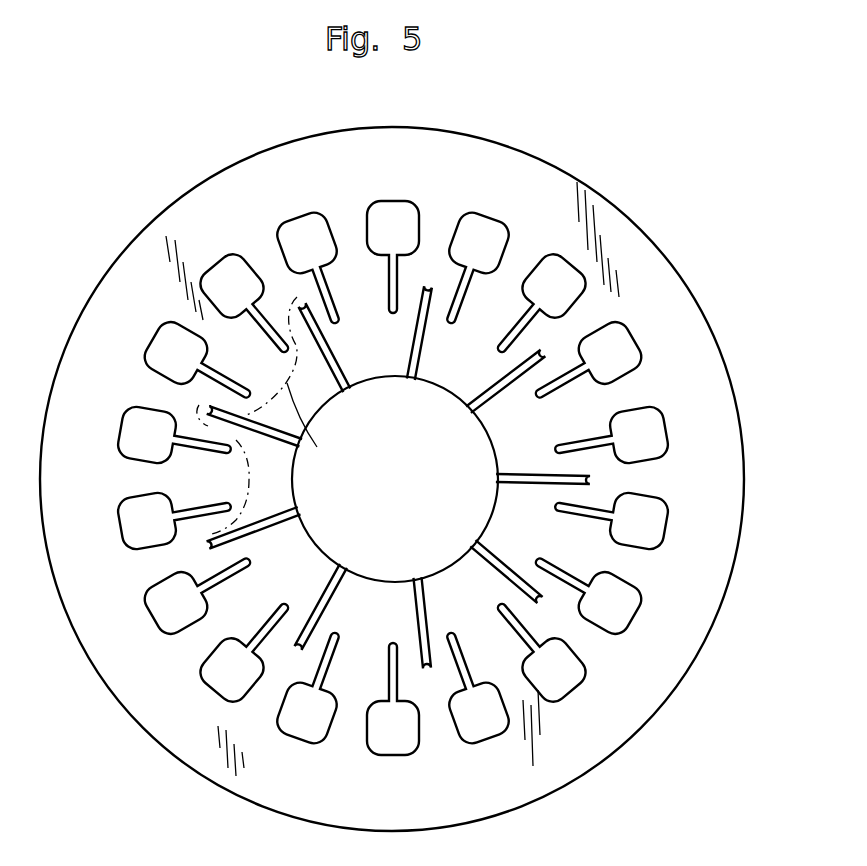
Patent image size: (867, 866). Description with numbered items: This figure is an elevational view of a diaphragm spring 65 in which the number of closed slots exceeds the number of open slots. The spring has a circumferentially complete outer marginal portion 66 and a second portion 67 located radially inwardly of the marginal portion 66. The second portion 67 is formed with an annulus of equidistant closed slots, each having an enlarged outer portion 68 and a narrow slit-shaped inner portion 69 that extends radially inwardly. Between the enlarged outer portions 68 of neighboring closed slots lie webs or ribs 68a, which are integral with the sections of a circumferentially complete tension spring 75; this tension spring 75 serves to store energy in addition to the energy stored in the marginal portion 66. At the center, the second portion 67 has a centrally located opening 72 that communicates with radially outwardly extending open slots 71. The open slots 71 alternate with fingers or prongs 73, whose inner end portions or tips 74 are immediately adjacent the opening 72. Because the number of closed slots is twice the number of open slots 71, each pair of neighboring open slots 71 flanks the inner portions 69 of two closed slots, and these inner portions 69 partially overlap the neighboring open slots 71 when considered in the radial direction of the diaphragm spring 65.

The diaphragm spring 65 is at (221, 170).
The outer marginal portion 66 is at (412, 157).
The second portion 67 is at (588, 548).
The enlarged outer portions of closed slots 68 is at (617, 348).
The webs or ribs 68a is at (648, 480).
The inner portions of closed slots 69 is at (617, 368).
The open slots 71 is at (497, 478).
The centrally located opening 72 is at (391, 529).
The fingers or prongs 73 is at (547, 417).
The inner end portions or tips 74 is at (318, 395).
The tension spring 75 is at (255, 482).